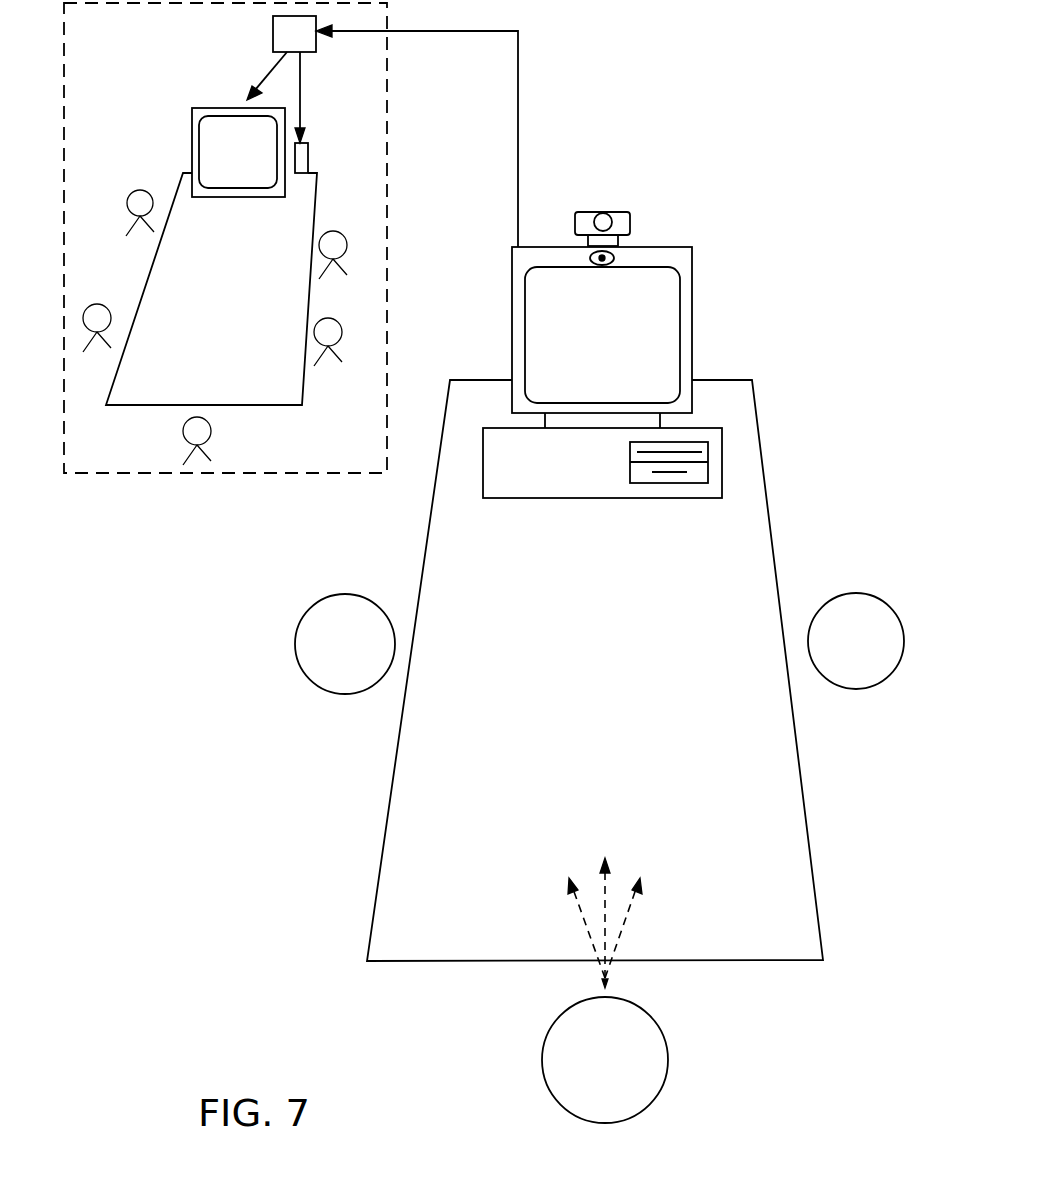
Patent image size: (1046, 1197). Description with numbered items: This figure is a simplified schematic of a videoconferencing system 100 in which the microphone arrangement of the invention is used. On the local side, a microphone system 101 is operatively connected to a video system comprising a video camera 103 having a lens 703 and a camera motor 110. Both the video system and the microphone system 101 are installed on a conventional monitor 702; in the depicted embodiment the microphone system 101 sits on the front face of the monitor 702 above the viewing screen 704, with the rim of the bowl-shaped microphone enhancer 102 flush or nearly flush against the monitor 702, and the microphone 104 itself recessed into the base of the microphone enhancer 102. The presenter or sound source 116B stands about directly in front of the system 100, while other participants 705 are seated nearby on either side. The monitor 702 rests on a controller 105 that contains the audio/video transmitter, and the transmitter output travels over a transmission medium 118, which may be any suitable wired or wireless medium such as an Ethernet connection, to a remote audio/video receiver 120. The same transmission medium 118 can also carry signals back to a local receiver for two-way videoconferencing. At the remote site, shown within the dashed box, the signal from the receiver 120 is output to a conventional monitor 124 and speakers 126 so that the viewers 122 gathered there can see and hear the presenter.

The system 100 is at (778, 148).
The microphone system 101 is at (578, 258).
The microphone enhancer 102 is at (616, 262).
The video camera 103 is at (648, 193).
The microphone 104 is at (613, 255).
The controller 105 is at (722, 460).
The camera motor 110 is at (622, 243).
The presenter or sound source 116B is at (668, 1057).
The transmission medium 118 is at (519, 88).
The remote audio/video receiver 120 is at (273, 31).
The viewers 122 is at (135, 193).
The monitor 124 is at (199, 108).
The speakers 126 is at (308, 150).
The monitor 702 is at (692, 339).
The lens 703 is at (603, 214).
The viewing screen 704 is at (665, 307).
The participants 705 is at (345, 594).